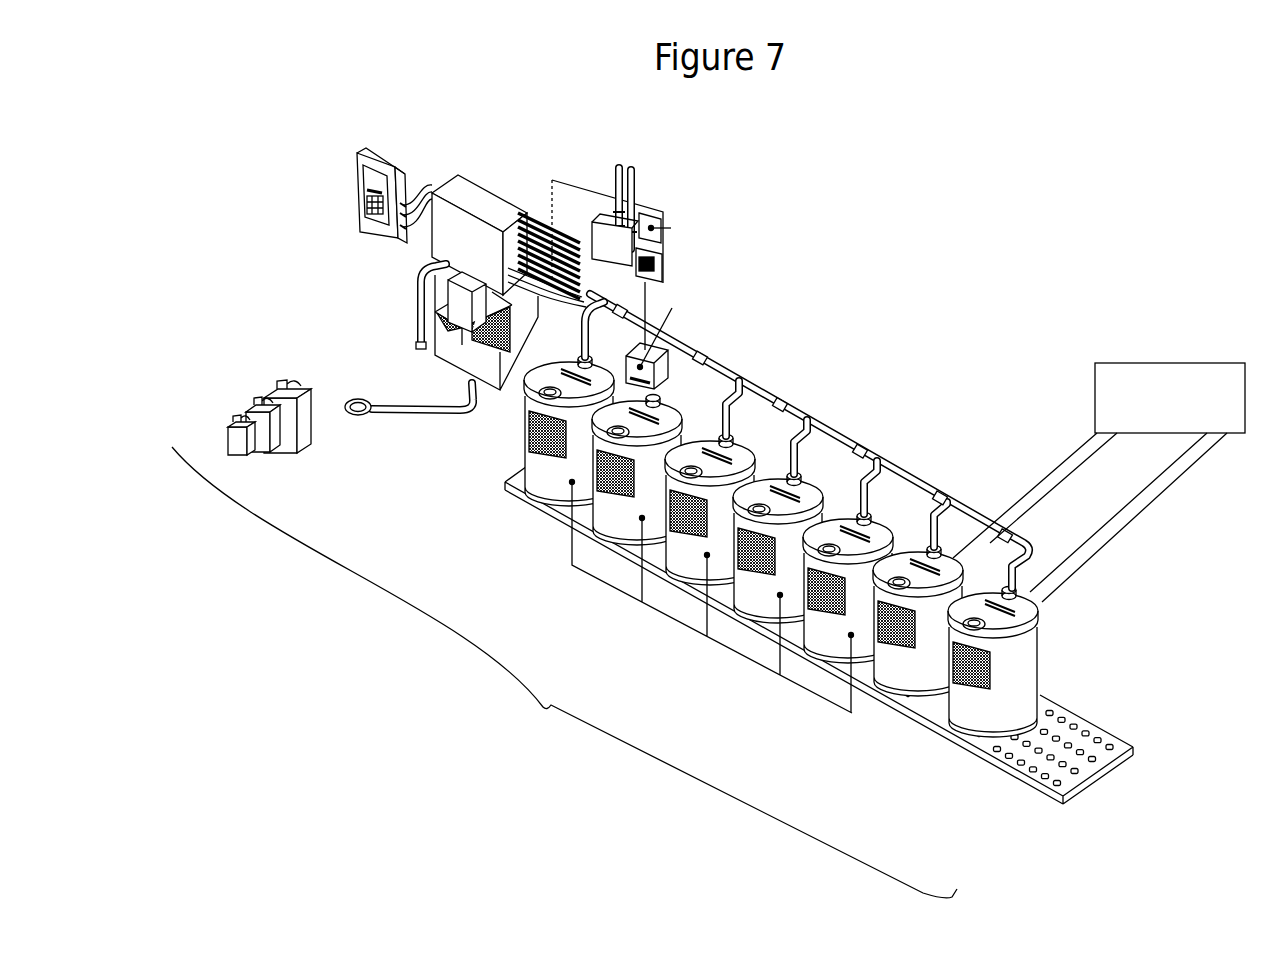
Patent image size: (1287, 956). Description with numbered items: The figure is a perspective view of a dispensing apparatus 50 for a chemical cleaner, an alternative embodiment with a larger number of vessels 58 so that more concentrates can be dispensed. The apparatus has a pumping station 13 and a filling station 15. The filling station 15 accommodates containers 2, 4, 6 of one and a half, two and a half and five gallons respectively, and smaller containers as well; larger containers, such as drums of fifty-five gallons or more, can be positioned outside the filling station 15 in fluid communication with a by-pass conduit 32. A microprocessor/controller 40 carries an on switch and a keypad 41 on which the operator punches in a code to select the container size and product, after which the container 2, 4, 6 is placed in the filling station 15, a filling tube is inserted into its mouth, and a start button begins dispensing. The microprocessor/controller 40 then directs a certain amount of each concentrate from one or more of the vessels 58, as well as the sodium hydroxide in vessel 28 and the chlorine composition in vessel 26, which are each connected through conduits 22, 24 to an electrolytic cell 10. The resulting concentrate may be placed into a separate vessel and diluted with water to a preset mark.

The container 2 is at (230, 422).
The container 4 is at (248, 405).
The container 6 is at (266, 386).
The electrolytic cell 10 is at (1175, 372).
The pumping station 13 is at (480, 250).
The filling station 15 is at (470, 369).
The conduit 22 is at (1037, 492).
The conduit 24 is at (1107, 542).
The vessel 26 is at (917, 672).
The vessel 28 is at (997, 715).
The by-pass conduit 32 is at (416, 313).
The microprocessor/controller 40 is at (368, 181).
The keypad 41 is at (369, 201).
The dispensing apparatus 50 is at (564, 672).
The vessels 58 is at (703, 635).